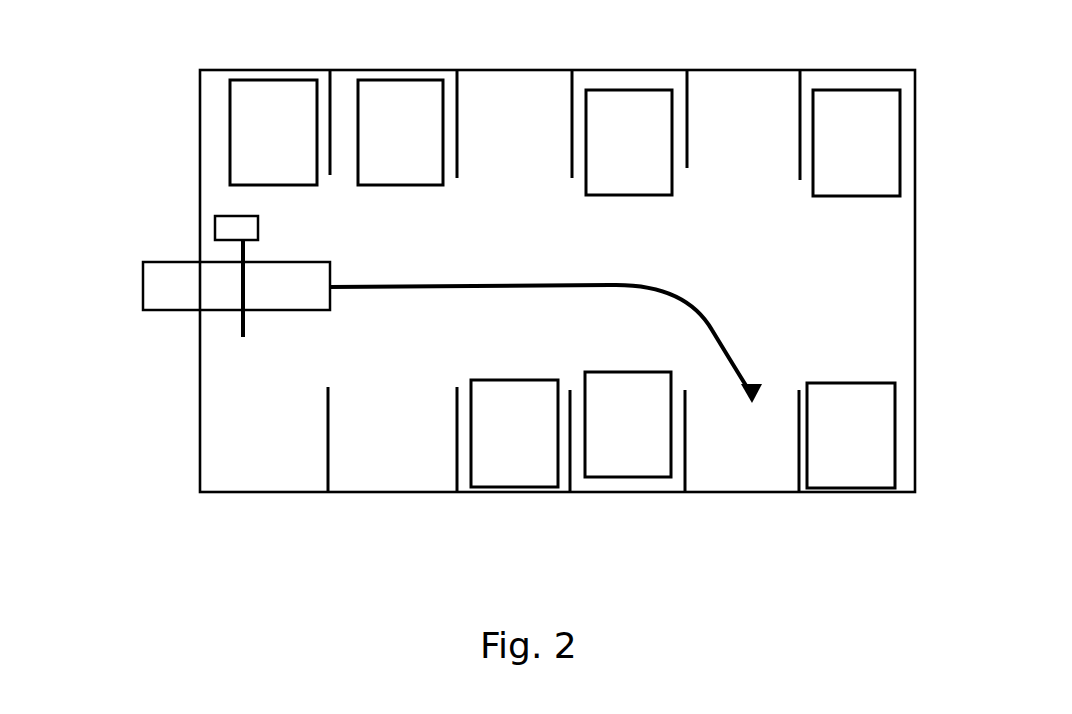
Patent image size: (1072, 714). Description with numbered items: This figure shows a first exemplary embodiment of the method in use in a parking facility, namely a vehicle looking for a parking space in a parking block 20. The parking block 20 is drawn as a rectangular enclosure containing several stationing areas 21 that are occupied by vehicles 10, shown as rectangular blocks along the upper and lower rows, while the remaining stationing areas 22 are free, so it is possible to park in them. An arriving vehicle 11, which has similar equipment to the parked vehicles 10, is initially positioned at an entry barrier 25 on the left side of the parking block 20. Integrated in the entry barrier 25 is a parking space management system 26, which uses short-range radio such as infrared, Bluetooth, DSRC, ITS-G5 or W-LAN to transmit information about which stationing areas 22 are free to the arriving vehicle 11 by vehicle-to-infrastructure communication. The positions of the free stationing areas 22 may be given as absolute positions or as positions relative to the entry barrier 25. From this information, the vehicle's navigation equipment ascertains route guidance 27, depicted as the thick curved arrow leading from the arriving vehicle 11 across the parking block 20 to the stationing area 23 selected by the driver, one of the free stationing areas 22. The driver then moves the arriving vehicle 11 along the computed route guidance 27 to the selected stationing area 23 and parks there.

The vehicle 10 is at (258, 107).
The arriving vehicle 11 is at (235, 224).
The parking block 20 is at (850, 268).
The stationing areas 21 is at (215, 153).
The stationing areas 22 is at (515, 100).
The stationing area 23 is at (730, 470).
The entry barrier 25 is at (243, 315).
The parking space management system 26 is at (163, 286).
The route guidance 27 is at (728, 333).